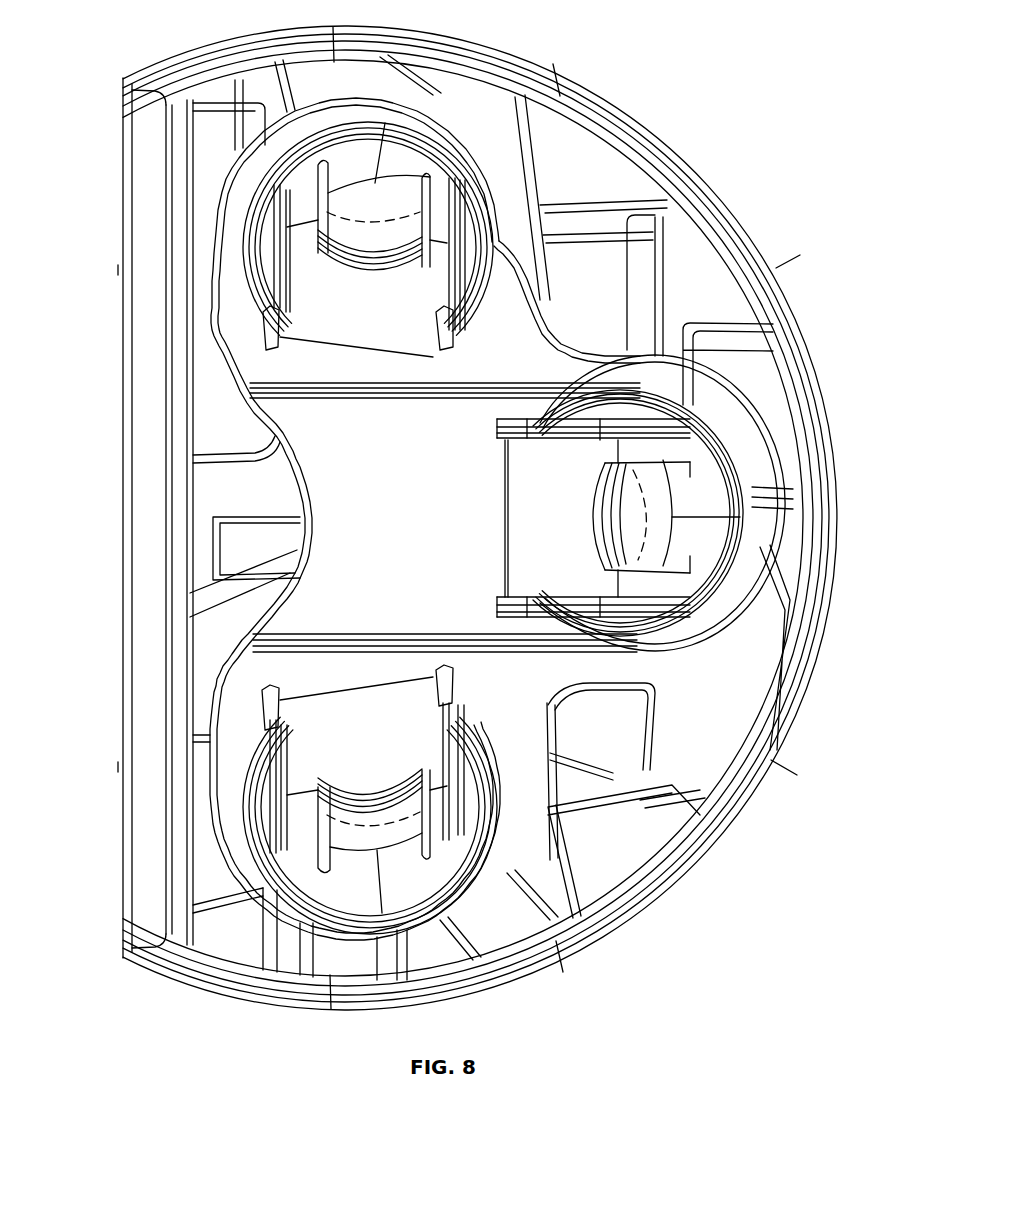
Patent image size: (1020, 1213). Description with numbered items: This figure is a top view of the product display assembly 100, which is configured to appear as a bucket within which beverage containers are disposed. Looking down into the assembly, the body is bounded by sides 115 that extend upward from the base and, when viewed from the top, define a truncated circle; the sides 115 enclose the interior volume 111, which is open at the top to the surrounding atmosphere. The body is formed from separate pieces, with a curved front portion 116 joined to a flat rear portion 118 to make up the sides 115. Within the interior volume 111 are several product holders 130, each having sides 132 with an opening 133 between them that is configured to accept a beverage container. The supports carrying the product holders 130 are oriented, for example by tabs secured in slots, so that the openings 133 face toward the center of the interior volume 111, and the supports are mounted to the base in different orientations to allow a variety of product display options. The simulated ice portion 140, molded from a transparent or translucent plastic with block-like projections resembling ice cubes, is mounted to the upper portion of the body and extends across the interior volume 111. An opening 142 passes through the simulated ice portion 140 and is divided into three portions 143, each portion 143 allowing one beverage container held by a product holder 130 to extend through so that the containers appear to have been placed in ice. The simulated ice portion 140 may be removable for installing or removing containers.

The product display assembly 100 is at (469, 512).
The interior volume 111 is at (538, 356).
The sides 115 is at (504, 518).
The front portion 116 is at (813, 410).
The rear portion 118 is at (122, 448).
The product holder 130 is at (448, 325).
The sides of product holder 132 is at (470, 295).
The opening of product holder 133 is at (355, 292).
The simulated ice portion 140 is at (617, 243).
The opening of simulated ice portion 142 is at (338, 525).
The portions of opening 143 is at (233, 316).